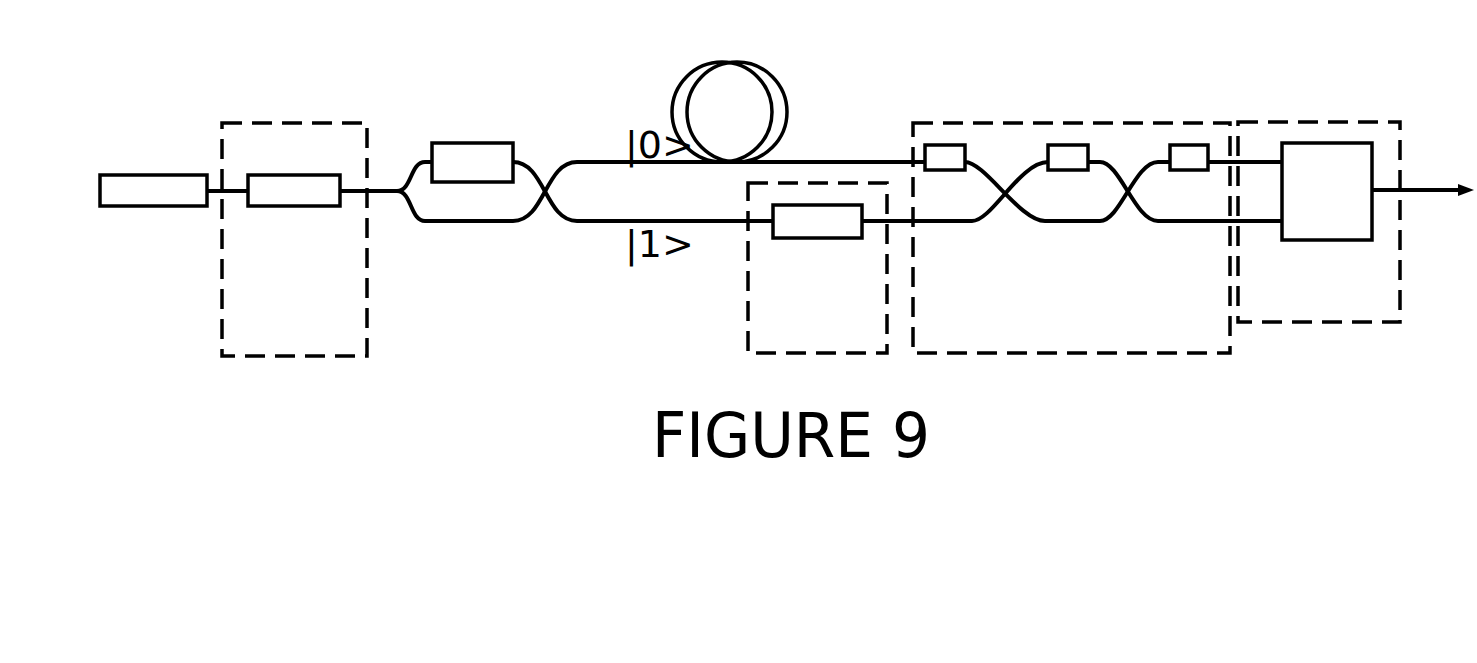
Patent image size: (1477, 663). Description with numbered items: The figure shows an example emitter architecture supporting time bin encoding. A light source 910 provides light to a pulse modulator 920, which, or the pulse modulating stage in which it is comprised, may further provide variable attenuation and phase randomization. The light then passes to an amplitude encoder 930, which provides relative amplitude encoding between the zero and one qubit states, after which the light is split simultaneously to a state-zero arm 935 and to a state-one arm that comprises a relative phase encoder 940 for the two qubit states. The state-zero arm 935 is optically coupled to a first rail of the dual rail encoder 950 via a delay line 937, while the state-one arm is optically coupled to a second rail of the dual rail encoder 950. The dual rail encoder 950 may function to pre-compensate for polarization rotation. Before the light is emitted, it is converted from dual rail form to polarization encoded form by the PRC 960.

The light source 910 is at (152, 196).
The pulse modulator 920 is at (292, 196).
The amplitude encoder 930 is at (473, 143).
The state |0 arm 935 is at (593, 160).
The delay line 937 is at (729, 112).
The relative phase encoder 940 is at (815, 232).
The dual rail encoder 950 is at (1071, 238).
The PRC 960 is at (1322, 215).